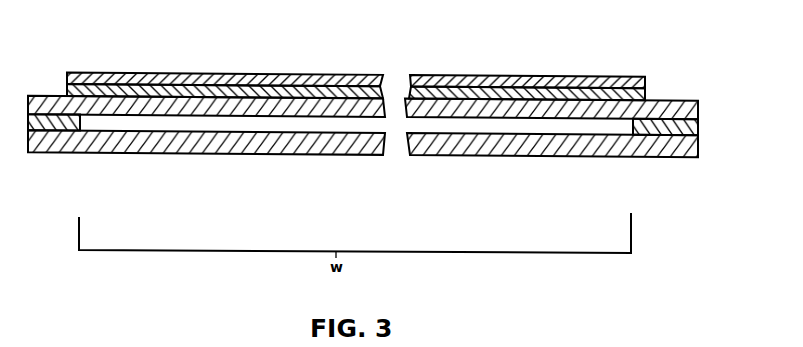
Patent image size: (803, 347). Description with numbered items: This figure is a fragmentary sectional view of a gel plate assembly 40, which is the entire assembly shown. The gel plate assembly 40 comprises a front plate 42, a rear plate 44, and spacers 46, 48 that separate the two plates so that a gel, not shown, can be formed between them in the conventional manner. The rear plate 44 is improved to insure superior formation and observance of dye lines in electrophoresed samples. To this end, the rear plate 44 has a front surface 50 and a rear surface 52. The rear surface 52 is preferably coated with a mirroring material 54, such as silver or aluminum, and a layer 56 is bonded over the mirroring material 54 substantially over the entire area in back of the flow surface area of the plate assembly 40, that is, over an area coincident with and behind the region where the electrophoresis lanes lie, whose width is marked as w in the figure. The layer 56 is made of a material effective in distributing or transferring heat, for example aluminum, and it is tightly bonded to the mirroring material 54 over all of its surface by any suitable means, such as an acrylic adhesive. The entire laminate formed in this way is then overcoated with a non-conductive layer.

The gel plate assembly 40 is at (686, 70).
The front plate 42 is at (597, 156).
The rear plate 44 is at (700, 107).
The spacer 46 is at (680, 129).
The spacer 48 is at (62, 127).
The front surface 50 is at (462, 118).
The rear surface 52 is at (653, 99).
The mirroring material 54 is at (386, 86).
The layer 56 is at (328, 73).